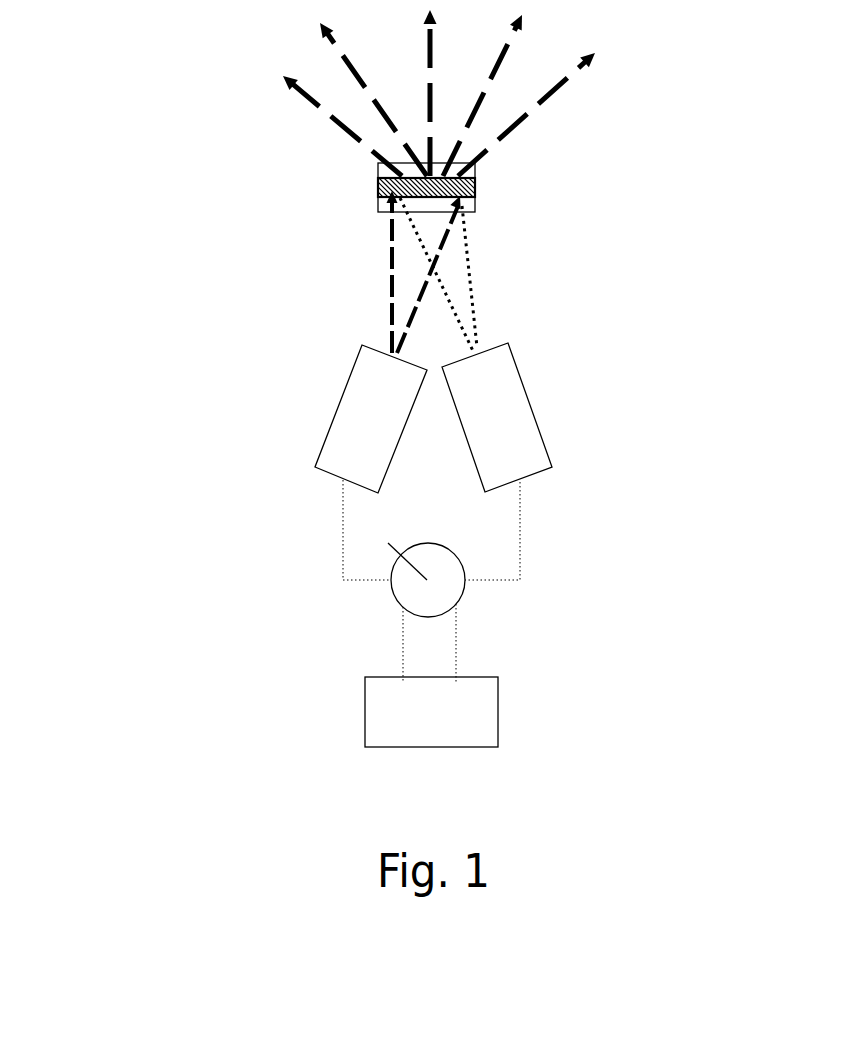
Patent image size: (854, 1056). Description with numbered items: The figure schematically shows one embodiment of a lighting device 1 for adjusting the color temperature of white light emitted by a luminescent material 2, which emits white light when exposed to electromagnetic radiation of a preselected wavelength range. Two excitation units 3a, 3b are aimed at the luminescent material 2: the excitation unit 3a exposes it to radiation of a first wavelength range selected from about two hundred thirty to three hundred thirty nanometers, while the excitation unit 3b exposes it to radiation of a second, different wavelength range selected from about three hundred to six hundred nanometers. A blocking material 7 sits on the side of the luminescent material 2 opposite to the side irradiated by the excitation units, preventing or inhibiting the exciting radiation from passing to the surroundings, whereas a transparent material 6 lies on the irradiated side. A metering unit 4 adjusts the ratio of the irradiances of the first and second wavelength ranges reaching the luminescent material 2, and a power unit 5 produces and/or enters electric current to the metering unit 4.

The lighting device 1 is at (290, 546).
The luminescent material 2 is at (486, 186).
The excitation unit 3a is at (375, 422).
The excitation unit 3b is at (505, 425).
The metering unit 4 is at (450, 577).
The power unit 5 is at (462, 730).
The transparent material 6 is at (486, 210).
The blocking material 7 is at (484, 165).